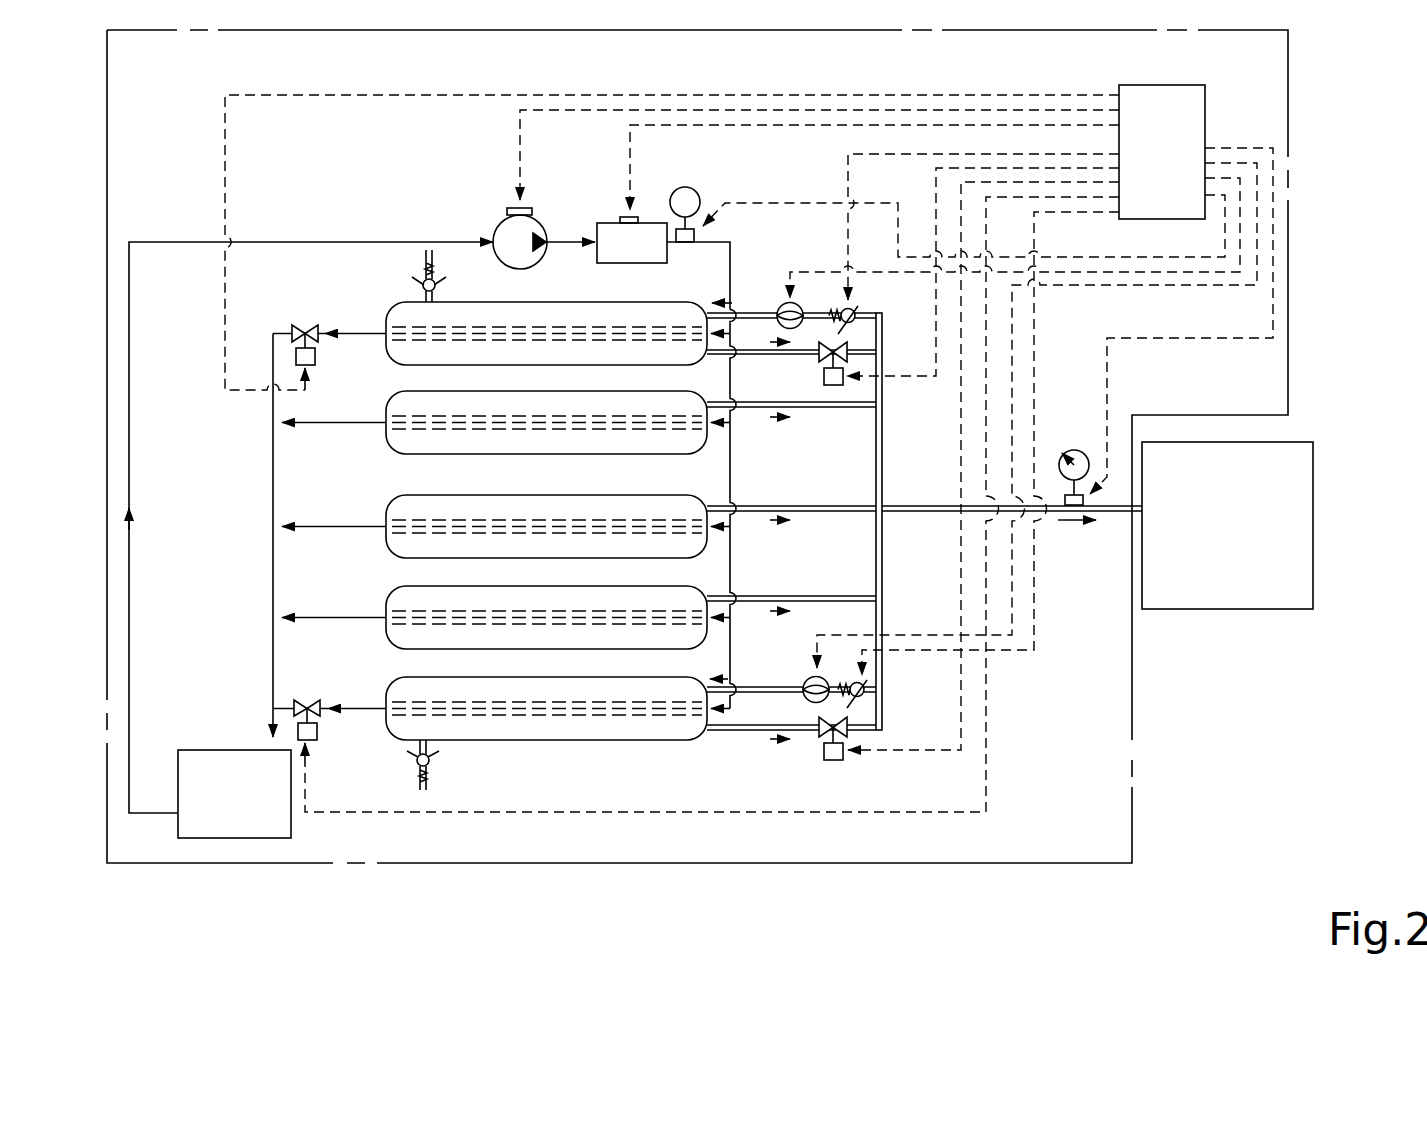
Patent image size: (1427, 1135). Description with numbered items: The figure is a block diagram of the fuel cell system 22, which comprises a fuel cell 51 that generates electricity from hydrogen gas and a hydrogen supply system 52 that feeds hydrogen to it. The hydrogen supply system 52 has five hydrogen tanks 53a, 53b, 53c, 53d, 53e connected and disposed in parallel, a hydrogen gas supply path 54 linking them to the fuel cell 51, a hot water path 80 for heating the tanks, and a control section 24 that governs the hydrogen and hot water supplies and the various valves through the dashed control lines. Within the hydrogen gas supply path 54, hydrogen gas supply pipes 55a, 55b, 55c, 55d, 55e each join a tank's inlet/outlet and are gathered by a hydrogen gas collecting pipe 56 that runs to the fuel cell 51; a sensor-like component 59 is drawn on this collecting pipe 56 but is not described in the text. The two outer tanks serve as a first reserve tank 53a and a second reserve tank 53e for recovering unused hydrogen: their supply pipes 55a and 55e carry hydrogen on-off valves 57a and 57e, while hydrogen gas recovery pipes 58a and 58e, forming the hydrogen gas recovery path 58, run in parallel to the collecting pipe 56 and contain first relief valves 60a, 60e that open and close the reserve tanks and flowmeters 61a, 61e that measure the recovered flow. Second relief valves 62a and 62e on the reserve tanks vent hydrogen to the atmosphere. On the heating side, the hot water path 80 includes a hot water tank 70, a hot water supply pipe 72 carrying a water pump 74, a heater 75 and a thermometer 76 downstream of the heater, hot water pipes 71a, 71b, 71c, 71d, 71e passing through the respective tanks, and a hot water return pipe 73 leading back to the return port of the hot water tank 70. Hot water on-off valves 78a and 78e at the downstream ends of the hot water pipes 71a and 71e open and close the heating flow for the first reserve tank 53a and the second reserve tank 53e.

The fuel cell system 22 is at (1192, 722).
The control section 24 is at (1179, 165).
The fuel cell 51 is at (1245, 540).
The hydrogen supply system 52 is at (1132, 745).
The first reserve tank 53a is at (390, 303).
The hydrogen tank 53b is at (415, 392).
The hydrogen tank 53c is at (415, 496).
The hydrogen tank 53d is at (415, 587).
The second reserve tank 53e is at (415, 678).
The hydrogen gas supply path 54 is at (879, 521).
The hydrogen gas supply pipe 55a is at (775, 355).
The hydrogen gas supply pipe 55b is at (749, 409).
The hydrogen gas supply pipe 55c is at (784, 505).
The hydrogen gas supply pipe 55d is at (765, 595).
The hydrogen gas supply pipe 55e is at (729, 732).
The hydrogen gas collecting pipe 56 is at (917, 505).
The hydrogen on-off valve 57a is at (840, 388).
The hydrogen on-off valve 57e is at (822, 760).
The hydrogen gas recovery path 58 is at (723, 509).
The hydrogen gas recovery pipe 58a is at (756, 312).
The hydrogen gas recovery pipe 58e is at (766, 687).
The pressure sensor 59 is at (1075, 450).
The first relief valve 60a is at (858, 310).
The first relief valve 60e is at (861, 700).
The flowmeter 61a is at (793, 300).
The flowmeter 61e is at (825, 676).
The second relief valve 62a is at (423, 286).
The second relief valve 62e is at (432, 758).
The hot water tank 70 is at (251, 808).
The hot water pipe 71a is at (545, 330).
The hot water pipe 71b is at (518, 430).
The hot water pipe 71c is at (547, 520).
The hot water pipe 71d is at (527, 625).
The hot water pipe 71e is at (648, 716).
The hot water supply pipe 72 is at (728, 258).
The hot water return pipe 73 is at (270, 595).
The water pump 74 is at (498, 230).
The heater 75 is at (613, 224).
The thermometer 76 is at (694, 189).
The hot water on-off valve 78a is at (303, 325).
The hot water on-off valve 78e is at (313, 720).
The hot water path 80 is at (130, 580).